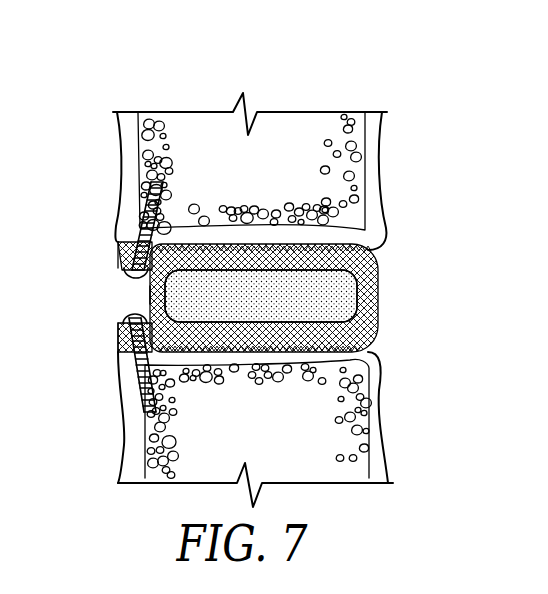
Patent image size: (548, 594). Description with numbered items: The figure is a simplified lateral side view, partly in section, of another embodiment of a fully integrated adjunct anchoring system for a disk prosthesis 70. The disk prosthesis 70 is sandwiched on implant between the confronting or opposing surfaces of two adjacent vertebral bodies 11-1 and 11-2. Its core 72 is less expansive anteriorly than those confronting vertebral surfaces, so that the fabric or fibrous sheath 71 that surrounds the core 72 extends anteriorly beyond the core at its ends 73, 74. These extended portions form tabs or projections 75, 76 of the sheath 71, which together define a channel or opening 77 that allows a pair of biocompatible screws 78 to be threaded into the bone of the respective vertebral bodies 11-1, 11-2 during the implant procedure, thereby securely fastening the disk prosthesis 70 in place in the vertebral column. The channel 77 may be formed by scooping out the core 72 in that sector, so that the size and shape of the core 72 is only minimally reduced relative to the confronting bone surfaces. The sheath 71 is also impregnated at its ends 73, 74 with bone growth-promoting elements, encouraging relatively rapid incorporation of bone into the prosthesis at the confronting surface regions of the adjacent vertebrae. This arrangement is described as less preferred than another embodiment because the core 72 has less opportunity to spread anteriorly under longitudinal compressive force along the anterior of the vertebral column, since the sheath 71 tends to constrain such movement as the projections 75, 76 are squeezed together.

The vertebral body 11-1 is at (203, 127).
The vertebral body 11-2 is at (320, 467).
The disk prosthesis 70 is at (237, 299).
The fabric or fibrous sheath 71 is at (372, 338).
The core 72 is at (346, 302).
The sheath end 73 is at (188, 233).
The sheath end 74 is at (195, 360).
The tab or projection 75 is at (118, 250).
The tab or projection 76 is at (120, 337).
The channel or opening 77 is at (147, 295).
The biocompatible screw 78 is at (132, 280).